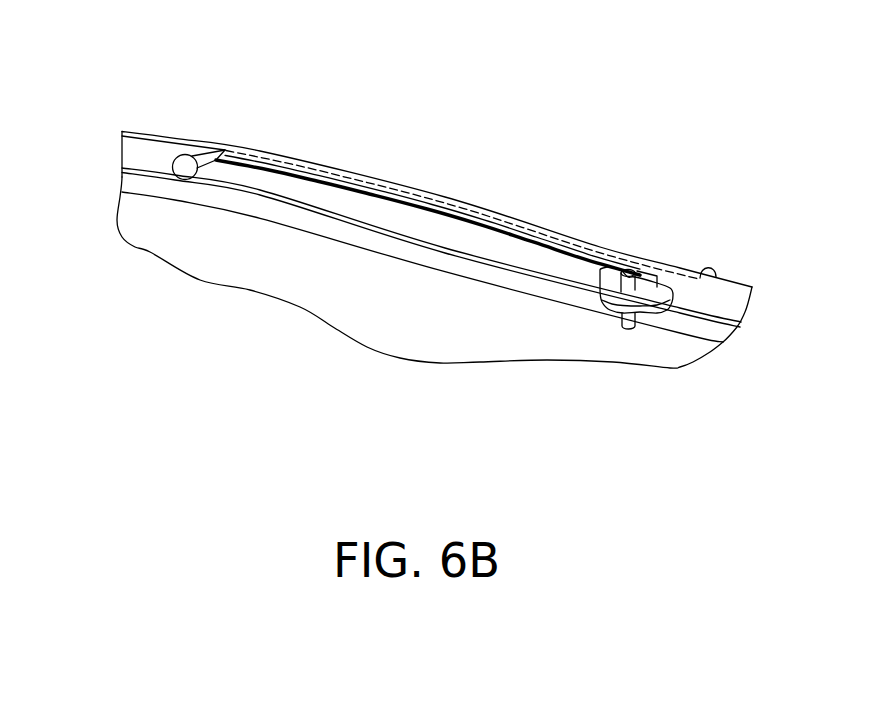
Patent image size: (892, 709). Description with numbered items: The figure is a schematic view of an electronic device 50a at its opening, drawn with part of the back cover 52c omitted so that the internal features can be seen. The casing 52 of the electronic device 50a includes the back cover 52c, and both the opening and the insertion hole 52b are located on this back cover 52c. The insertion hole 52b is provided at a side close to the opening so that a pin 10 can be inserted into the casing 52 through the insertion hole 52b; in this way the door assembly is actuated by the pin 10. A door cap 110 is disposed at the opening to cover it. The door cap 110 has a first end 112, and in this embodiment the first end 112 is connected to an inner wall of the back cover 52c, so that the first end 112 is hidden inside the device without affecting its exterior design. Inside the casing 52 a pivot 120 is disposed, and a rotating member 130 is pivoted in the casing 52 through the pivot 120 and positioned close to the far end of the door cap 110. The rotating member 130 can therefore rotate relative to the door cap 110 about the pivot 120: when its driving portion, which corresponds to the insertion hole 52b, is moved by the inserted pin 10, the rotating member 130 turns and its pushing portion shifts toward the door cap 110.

The pin 10 is at (708, 270).
The electronic device 50a is at (768, 461).
The casing 52 is at (313, 274).
The insertion hole 52b is at (679, 288).
The back cover 52c is at (148, 150).
The door cap 110 is at (433, 227).
The first end 112 is at (184, 164).
The pivot 120 is at (606, 288).
The rotating member 130 is at (636, 307).